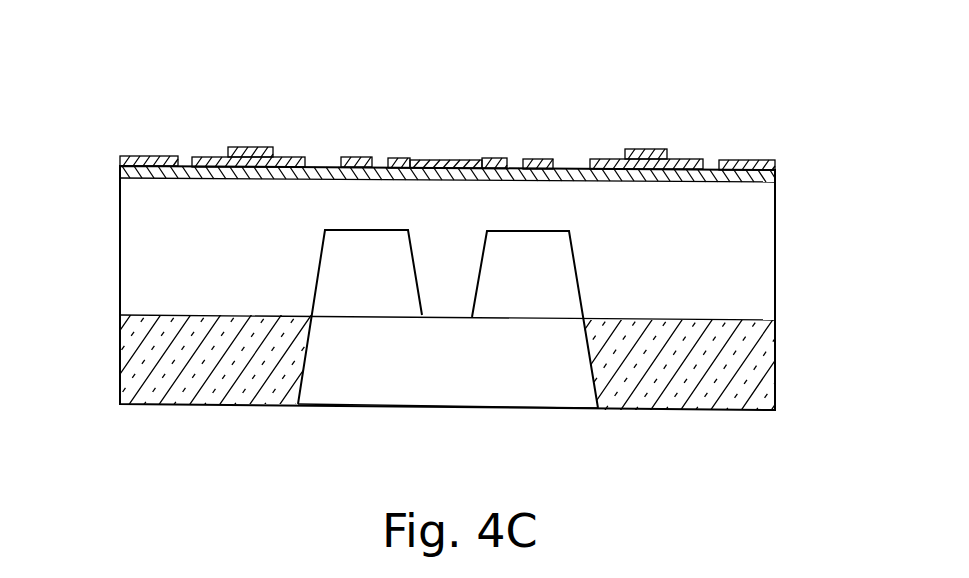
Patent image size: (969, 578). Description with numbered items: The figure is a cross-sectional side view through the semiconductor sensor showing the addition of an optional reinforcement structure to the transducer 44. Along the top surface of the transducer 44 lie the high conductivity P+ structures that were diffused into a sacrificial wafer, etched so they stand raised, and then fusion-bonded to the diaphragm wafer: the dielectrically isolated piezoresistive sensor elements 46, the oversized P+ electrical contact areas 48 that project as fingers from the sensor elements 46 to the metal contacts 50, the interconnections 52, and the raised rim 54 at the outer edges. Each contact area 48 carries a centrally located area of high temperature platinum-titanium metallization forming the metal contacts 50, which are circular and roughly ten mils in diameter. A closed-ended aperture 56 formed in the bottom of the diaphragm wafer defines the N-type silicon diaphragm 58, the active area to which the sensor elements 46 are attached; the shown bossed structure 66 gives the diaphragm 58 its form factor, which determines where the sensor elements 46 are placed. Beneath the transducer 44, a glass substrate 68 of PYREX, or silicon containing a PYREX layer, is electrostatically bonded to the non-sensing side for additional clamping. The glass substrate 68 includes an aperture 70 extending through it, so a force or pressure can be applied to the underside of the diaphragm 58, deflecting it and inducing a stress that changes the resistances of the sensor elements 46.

The transducer 44 is at (775, 236).
The sensor elements 46 is at (405, 158).
The electrical contact areas 48 is at (208, 157).
The metal contacts 50 is at (248, 147).
The interconnections 52 is at (447, 160).
The raised rim 54 is at (152, 156).
The aperture 56 is at (357, 303).
The diaphragm 58 is at (415, 197).
The bossed structure 66 is at (477, 296).
The glass substrate 68 is at (120, 365).
The aperture 70 is at (542, 395).